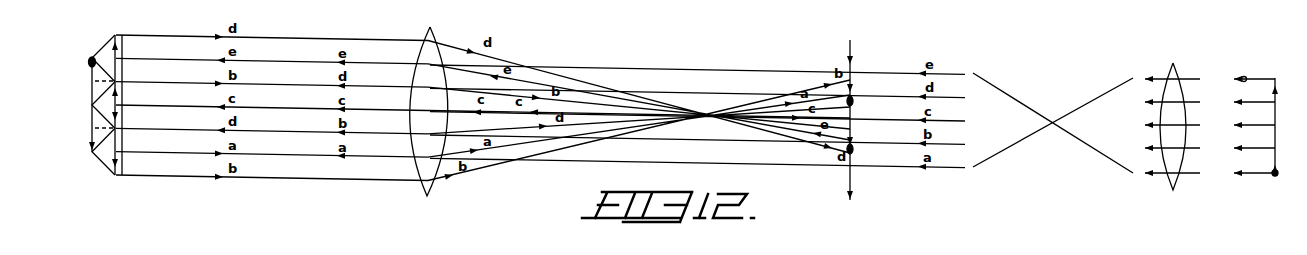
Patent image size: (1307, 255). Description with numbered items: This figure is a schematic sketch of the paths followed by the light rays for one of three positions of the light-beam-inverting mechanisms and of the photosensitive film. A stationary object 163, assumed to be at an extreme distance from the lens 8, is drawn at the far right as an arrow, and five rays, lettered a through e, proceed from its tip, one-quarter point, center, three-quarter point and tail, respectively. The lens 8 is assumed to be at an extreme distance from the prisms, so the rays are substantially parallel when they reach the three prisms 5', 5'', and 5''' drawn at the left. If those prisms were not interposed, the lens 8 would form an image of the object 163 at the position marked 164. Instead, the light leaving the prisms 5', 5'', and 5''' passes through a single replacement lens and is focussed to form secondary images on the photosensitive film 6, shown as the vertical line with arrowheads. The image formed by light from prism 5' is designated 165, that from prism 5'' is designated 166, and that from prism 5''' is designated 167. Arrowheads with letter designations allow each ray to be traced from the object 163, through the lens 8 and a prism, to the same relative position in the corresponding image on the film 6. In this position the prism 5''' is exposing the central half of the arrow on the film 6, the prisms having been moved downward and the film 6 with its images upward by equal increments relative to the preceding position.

The prism 5' is at (94, 50).
The prism 5'' is at (79, 115).
The prism 5''' is at (88, 158).
The image position 164 is at (92, 88).
The photosensitive film 6 is at (852, 58).
The image 167 is at (853, 74).
The image 166 is at (851, 114).
The image 165 is at (852, 175).
The lens 8 is at (1178, 70).
The stationary object 163 is at (1277, 117).